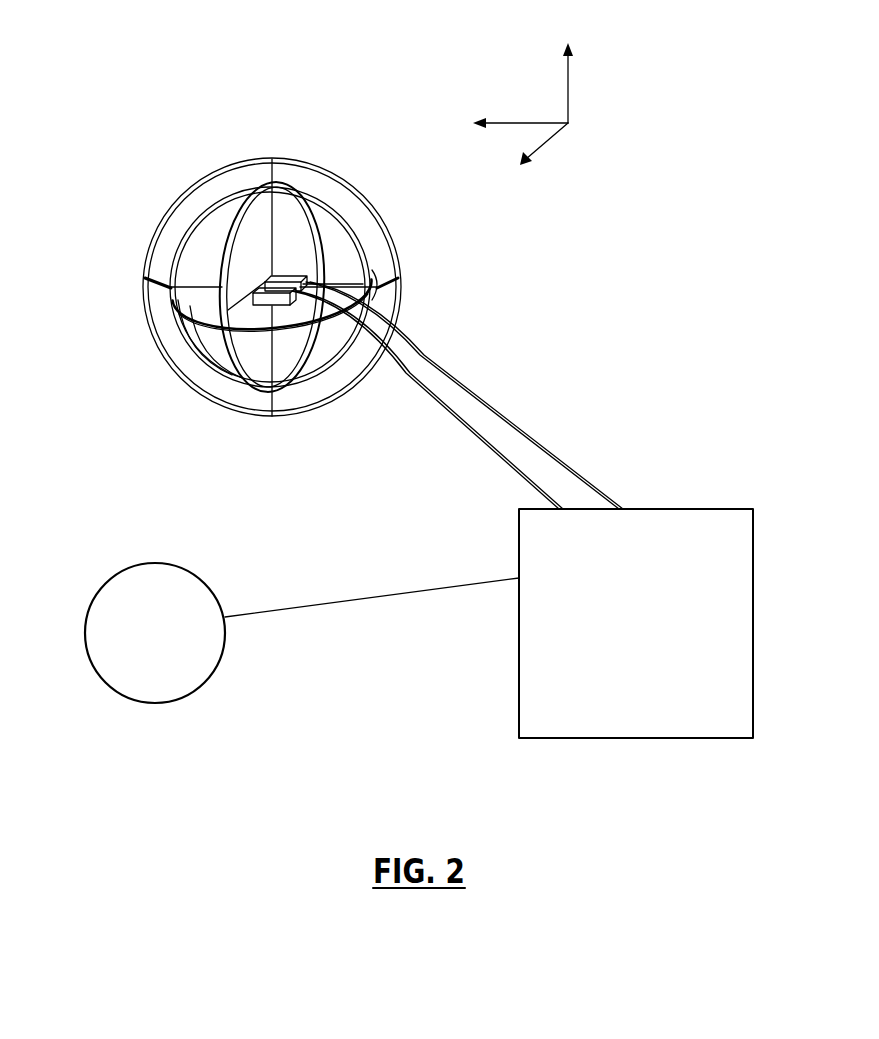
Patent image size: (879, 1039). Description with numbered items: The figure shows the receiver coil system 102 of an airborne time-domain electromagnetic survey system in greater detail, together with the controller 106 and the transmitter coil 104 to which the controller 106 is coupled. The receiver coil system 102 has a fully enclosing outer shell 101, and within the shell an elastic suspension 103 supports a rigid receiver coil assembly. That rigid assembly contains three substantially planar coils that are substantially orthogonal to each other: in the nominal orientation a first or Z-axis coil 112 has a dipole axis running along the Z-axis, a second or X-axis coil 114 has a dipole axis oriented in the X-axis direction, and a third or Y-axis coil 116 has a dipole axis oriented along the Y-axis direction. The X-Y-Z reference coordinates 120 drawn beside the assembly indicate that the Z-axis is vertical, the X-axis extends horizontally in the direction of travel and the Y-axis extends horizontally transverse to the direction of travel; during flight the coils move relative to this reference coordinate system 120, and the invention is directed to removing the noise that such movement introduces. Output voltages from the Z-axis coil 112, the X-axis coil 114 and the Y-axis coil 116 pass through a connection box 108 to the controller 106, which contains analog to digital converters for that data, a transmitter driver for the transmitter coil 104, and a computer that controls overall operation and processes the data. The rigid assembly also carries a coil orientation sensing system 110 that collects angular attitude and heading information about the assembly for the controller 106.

The outer shell 101 is at (395, 298).
The receiver coil system 102 is at (314, 130).
The elastic suspension 103 is at (152, 290).
The transmitter coil 104 is at (177, 647).
The controller 106 is at (519, 662).
The connection box 108 is at (293, 276).
The coil orientation sensing system 110 is at (273, 300).
The Z-axis coil 112 is at (167, 310).
The X-axis coil 114 is at (250, 230).
The Y-axis coil 116 is at (185, 226).
The X-Y-Z reference coordinates 120 is at (594, 98).